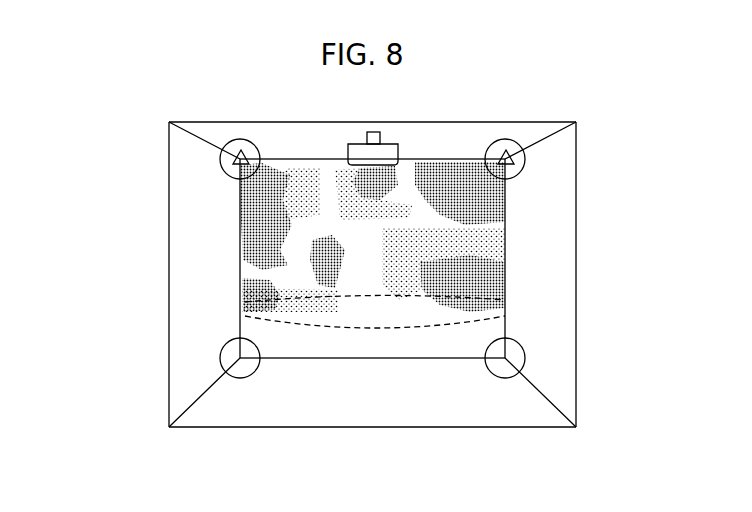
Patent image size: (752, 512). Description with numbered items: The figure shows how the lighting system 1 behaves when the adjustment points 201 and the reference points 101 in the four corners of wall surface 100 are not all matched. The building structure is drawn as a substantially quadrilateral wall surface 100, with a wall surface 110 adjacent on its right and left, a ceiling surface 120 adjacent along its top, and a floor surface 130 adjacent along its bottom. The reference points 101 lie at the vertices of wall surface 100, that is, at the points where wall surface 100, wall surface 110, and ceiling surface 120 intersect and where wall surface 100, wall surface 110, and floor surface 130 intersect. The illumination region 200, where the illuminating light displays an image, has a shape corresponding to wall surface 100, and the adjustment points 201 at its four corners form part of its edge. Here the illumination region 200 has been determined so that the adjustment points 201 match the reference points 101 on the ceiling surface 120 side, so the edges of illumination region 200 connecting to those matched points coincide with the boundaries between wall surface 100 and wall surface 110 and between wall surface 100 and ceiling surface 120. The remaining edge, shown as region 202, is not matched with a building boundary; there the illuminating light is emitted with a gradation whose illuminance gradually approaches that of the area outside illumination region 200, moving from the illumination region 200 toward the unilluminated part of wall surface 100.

The lighting system 1 is at (389, 136).
The wall surface 100 is at (457, 342).
The reference points 101 is at (220, 158).
The wall surface 110 is at (207, 258).
The ceiling surface 120 is at (450, 138).
The floor surface 130 is at (480, 403).
The illumination region 200 is at (297, 200).
The adjustment points 201 is at (241, 156).
The region 202 is at (487, 297).